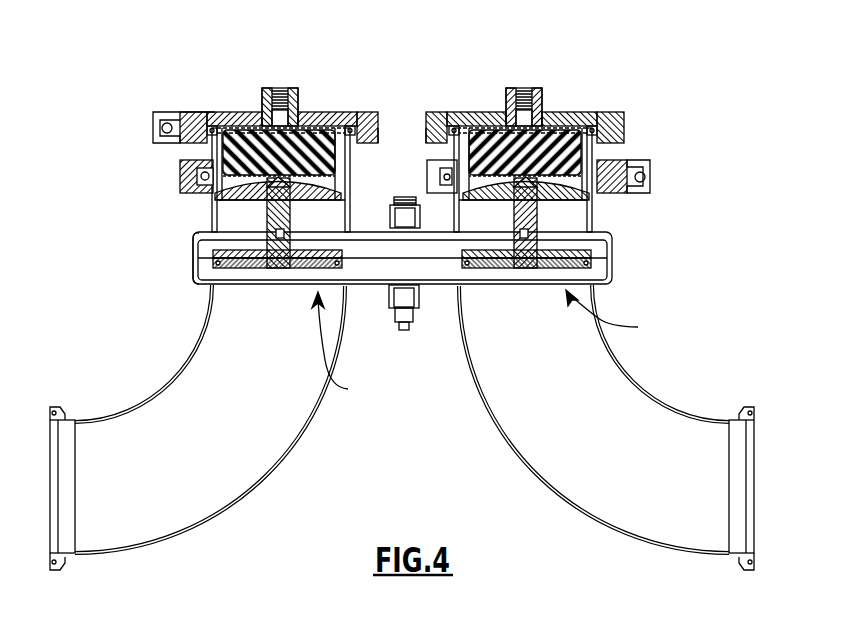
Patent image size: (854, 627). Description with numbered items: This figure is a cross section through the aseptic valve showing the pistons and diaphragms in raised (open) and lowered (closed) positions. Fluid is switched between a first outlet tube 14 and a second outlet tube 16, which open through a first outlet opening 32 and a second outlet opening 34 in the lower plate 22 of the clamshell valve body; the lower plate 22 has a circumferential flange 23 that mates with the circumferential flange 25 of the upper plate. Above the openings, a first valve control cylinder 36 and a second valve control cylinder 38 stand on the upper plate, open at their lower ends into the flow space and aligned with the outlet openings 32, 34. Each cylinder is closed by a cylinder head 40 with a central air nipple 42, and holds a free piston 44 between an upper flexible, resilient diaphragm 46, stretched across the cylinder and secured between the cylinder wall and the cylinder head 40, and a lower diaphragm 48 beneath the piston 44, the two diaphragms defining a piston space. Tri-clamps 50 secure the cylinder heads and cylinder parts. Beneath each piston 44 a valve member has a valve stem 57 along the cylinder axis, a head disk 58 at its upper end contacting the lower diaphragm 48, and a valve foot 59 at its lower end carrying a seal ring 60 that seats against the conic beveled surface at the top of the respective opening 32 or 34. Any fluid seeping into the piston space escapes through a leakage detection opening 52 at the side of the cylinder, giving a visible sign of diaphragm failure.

The first outlet tube 14 is at (157, 395).
The second outlet tube 16 is at (647, 394).
The lower plate 22 is at (437, 283).
The circumferential flange 23 is at (613, 270).
The circumferential flange 25 is at (612, 250).
The first outlet opening 32 is at (345, 348).
The second outlet opening 34 is at (617, 315).
The first valve control cylinder 36 is at (212, 212).
The second valve control cylinder 38 is at (597, 214).
The cylinder head 40 is at (241, 113).
The central air nipple 42 is at (297, 90).
The free piston 44 is at (227, 158).
The upper flexible, resilient diaphragm 46 is at (318, 114).
The lower diaphragm 48 is at (200, 194).
The tri-clamp 50 is at (155, 113).
The leakage detection opening 52 is at (380, 148).
The valve stem 57 is at (267, 212).
The head disk 58 is at (243, 202).
The valve foot 59 is at (217, 262).
The seal ring 60 is at (212, 256).